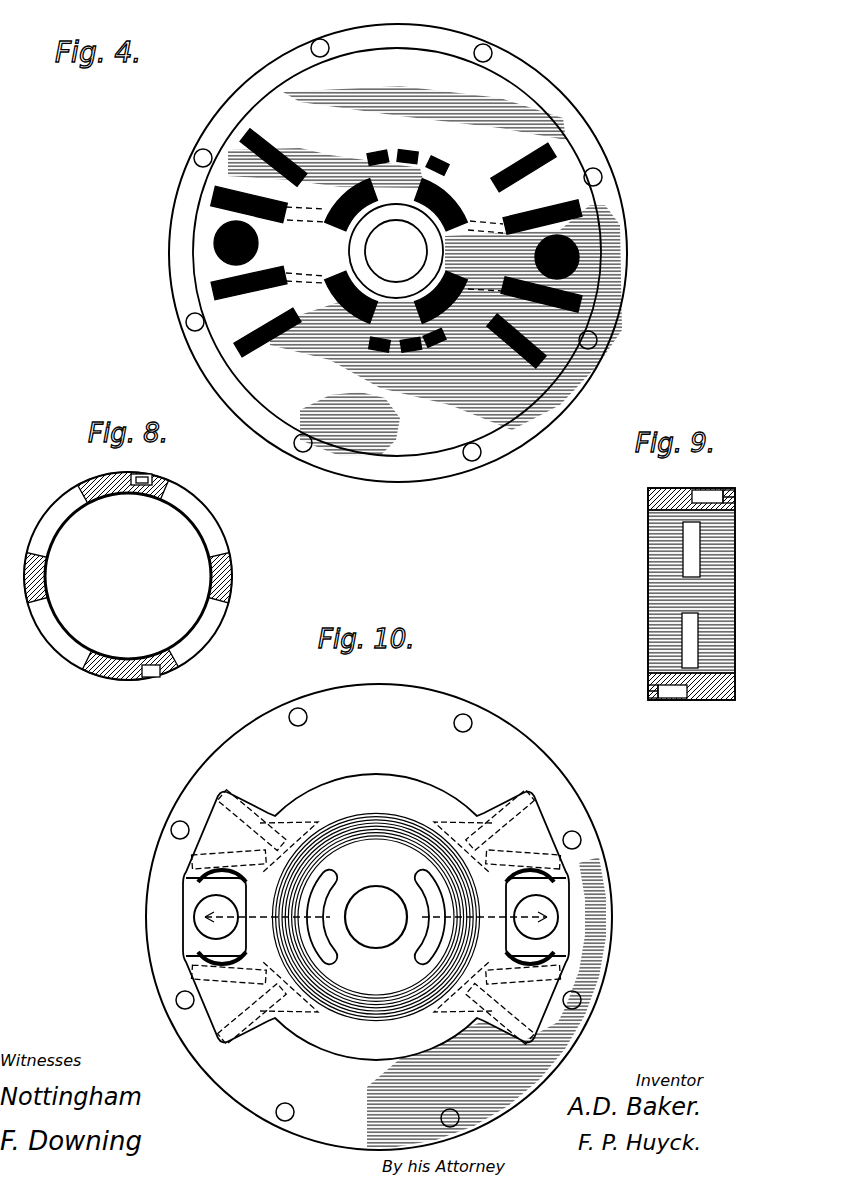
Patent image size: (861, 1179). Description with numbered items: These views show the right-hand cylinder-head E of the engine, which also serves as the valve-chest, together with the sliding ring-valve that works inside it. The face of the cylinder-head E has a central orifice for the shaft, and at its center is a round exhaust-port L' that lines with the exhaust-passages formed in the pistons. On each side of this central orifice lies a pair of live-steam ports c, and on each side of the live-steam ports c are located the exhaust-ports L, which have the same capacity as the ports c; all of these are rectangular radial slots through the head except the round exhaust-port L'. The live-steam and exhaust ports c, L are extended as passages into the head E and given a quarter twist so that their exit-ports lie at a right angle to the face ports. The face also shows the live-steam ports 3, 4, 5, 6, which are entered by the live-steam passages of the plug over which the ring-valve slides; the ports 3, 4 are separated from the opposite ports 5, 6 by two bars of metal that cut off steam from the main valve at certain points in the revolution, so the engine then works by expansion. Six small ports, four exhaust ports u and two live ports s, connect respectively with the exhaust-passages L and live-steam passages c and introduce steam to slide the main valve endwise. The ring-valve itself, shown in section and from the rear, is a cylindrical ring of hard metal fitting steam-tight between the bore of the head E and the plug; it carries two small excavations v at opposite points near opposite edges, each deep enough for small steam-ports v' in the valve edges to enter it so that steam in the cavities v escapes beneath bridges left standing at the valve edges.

In FIG. 4, the cylinder-head E is at (398, 253).
In FIG. 4, the exhaust-ports L is at (395, 251).
In FIG. 10, the exhaust-ports L is at (376, 913).
In FIG. 4, the round exhaust-port L' is at (396, 250).
In FIG. 10, the round exhaust-port L' is at (376, 917).
In FIG. 4, the live-steam ports c is at (396, 252).
In FIG. 10, the live-steam ports c is at (376, 919).
In FIG. 4, the live-steam port 3 is at (441, 205).
In FIG. 4, the live-steam port 4 is at (441, 297).
In FIG. 4, the live-steam port 5 is at (342, 188).
In FIG. 4, the live-steam port 6 is at (349, 297).
In FIG. 4, the small live-steam ports s is at (377, 356).
In FIG. 4, the small exhaust-ports u is at (423, 250).
In FIG. 8, the excavations v is at (151, 573).
In FIG. 9, the excavations v is at (690, 595).
In FIG. 8, the small steam-ports v' is at (161, 472).
In FIG. 9, the small steam-ports v' is at (691, 594).